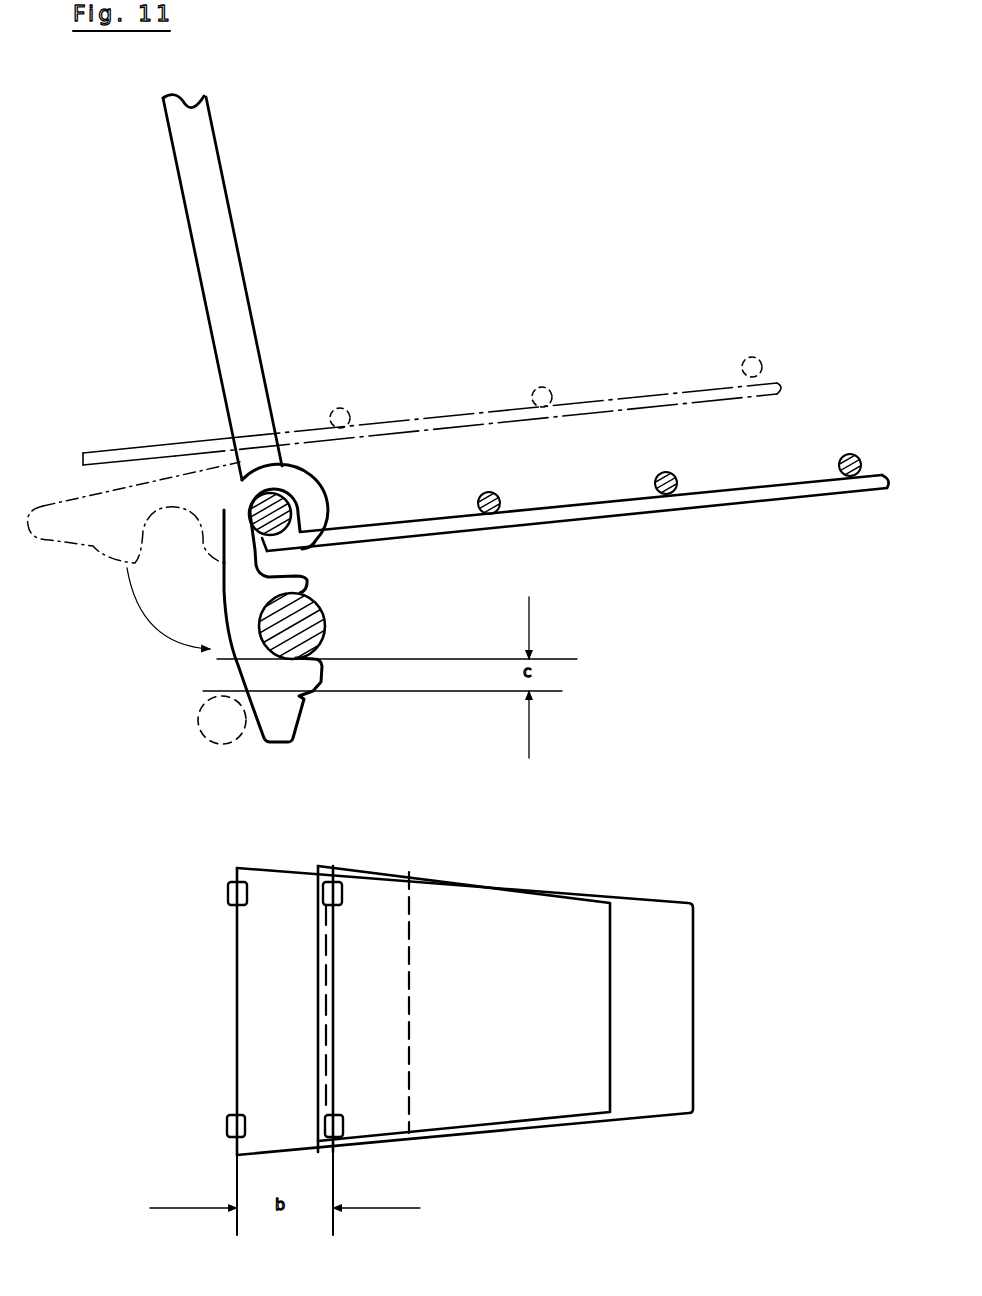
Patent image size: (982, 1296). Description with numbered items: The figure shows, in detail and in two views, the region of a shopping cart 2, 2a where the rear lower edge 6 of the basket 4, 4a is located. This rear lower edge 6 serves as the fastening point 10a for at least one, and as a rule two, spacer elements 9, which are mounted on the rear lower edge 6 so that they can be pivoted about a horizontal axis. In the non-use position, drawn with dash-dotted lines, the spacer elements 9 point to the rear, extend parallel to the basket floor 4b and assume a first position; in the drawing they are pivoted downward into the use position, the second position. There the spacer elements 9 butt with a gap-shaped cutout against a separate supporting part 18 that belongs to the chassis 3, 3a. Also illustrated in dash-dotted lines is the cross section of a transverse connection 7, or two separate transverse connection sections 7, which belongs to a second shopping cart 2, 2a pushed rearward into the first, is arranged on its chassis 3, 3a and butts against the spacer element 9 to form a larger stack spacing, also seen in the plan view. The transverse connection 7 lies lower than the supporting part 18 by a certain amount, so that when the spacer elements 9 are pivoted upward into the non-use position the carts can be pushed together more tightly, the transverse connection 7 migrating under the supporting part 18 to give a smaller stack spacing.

The shopping cart 2 is at (461, 667).
The shopping cart 2a is at (637, 235).
The basket 4 is at (364, 662).
The basket 4a is at (487, 207).
The basket floor 4b is at (655, 387).
The rear lower edge 6 is at (288, 765).
The fastening point 10a is at (283, 503).
The supporting part 18 is at (300, 622).
The spacer element 9 is at (250, 628).
The transverse connection 7 is at (222, 720).
The chassis 3 is at (465, 643).
The chassis 3a is at (728, 617).